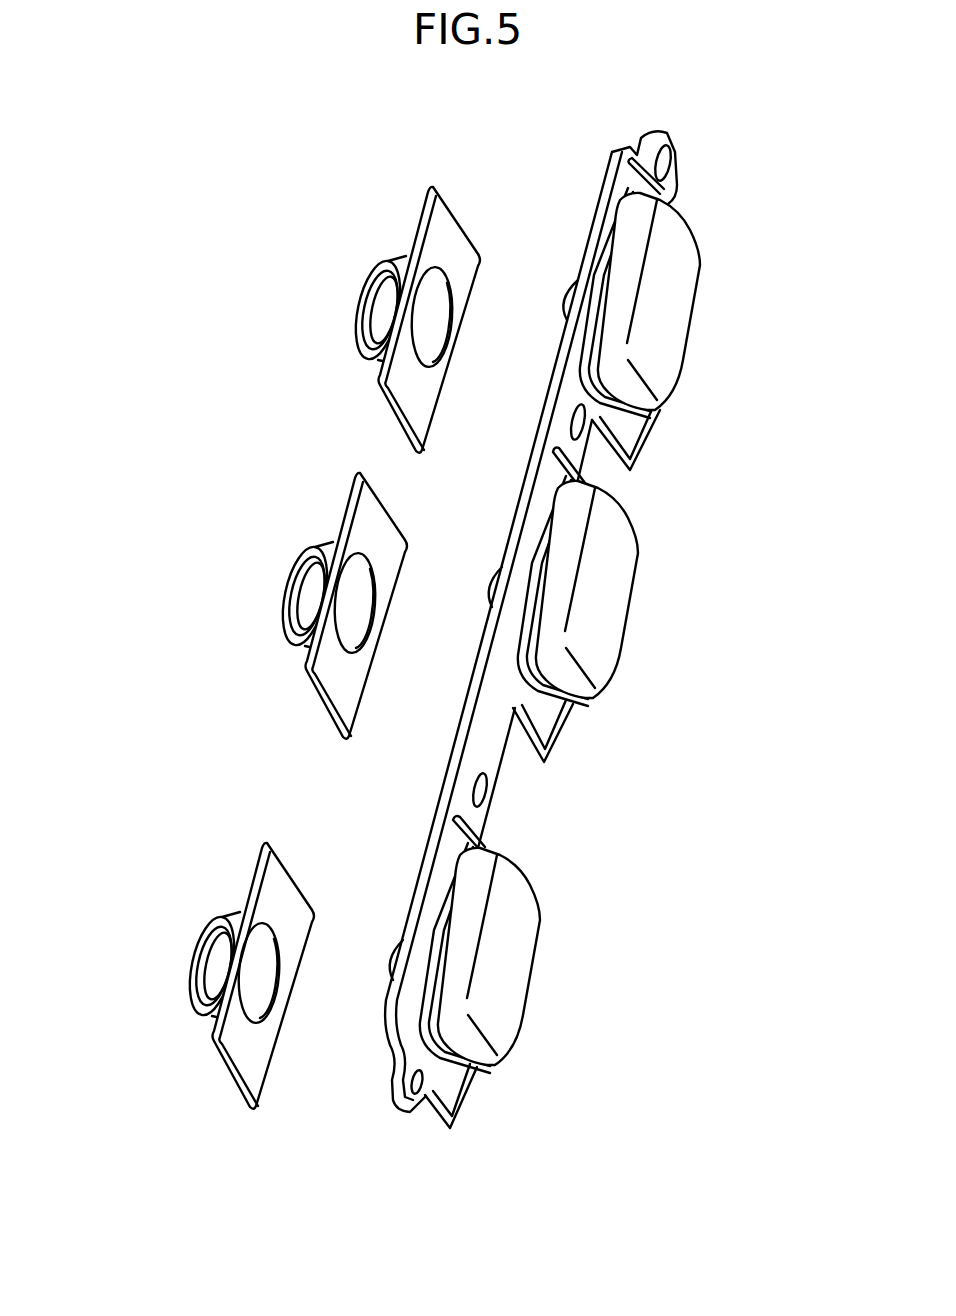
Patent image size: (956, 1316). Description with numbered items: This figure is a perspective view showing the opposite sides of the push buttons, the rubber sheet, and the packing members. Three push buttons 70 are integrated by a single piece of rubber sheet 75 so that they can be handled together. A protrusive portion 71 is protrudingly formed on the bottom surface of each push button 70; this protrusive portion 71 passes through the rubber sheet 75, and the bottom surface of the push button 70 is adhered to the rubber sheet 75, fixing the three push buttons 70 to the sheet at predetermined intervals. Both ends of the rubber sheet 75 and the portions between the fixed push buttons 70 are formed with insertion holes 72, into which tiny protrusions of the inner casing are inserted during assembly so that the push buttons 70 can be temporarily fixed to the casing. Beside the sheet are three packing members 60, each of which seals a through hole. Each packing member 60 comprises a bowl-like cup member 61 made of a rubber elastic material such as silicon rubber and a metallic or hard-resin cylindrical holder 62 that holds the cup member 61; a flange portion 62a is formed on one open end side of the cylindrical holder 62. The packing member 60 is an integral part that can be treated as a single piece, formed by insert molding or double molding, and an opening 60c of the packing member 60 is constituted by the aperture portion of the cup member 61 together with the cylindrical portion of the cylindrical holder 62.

The packing member 60 is at (300, 646).
The opening 60c is at (430, 337).
The cup member 61 is at (380, 330).
The cylindrical holder 62 is at (299, 646).
The flange portion 62a is at (223, 1038).
The push button 70 is at (673, 323).
The protrusive portion 71 is at (572, 287).
The insertion hole 72 is at (669, 163).
The rubber sheet 75 is at (546, 673).